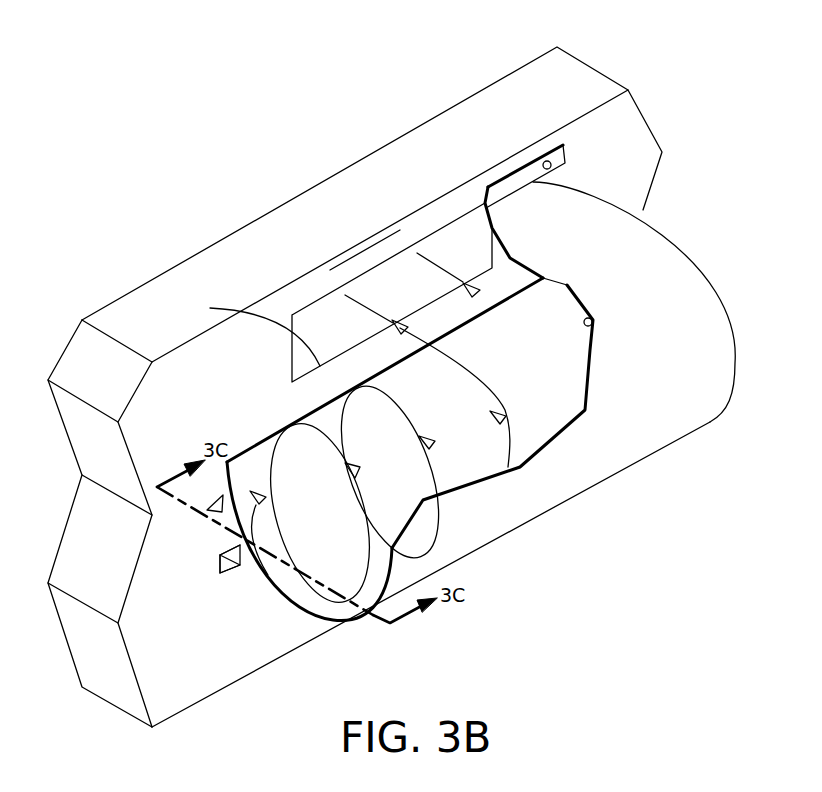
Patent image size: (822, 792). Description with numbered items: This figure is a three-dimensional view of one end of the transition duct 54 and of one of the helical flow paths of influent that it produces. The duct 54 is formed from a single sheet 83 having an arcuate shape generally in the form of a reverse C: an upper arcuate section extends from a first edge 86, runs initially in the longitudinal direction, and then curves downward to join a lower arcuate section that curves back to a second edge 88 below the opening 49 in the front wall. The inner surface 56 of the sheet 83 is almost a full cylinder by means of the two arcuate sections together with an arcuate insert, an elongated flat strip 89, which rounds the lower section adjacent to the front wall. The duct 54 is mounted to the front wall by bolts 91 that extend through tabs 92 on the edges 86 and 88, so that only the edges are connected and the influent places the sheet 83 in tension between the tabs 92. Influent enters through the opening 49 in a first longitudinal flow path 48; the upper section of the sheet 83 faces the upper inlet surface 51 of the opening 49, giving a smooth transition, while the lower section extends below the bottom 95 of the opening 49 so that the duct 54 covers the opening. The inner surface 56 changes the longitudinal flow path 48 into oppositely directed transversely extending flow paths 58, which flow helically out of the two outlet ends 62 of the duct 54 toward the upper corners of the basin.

The transition duct 54 is at (616, 482).
The first edge 86 is at (615, 193).
The tabs 92 is at (520, 175).
The bolts 91 is at (550, 160).
The opening 49 is at (338, 312).
The upper inlet surface 51 is at (357, 283).
The first longitudinal flow path 48 is at (440, 265).
The bottom of the opening 95 is at (247, 334).
The single sheet 83 is at (597, 332).
The inner surface 56 is at (367, 618).
The outlet ends 62 is at (268, 575).
The transversely extending flow paths 58 is at (470, 378).
The second edge 88 is at (240, 542).
The elongated flat strip 89 is at (235, 548).